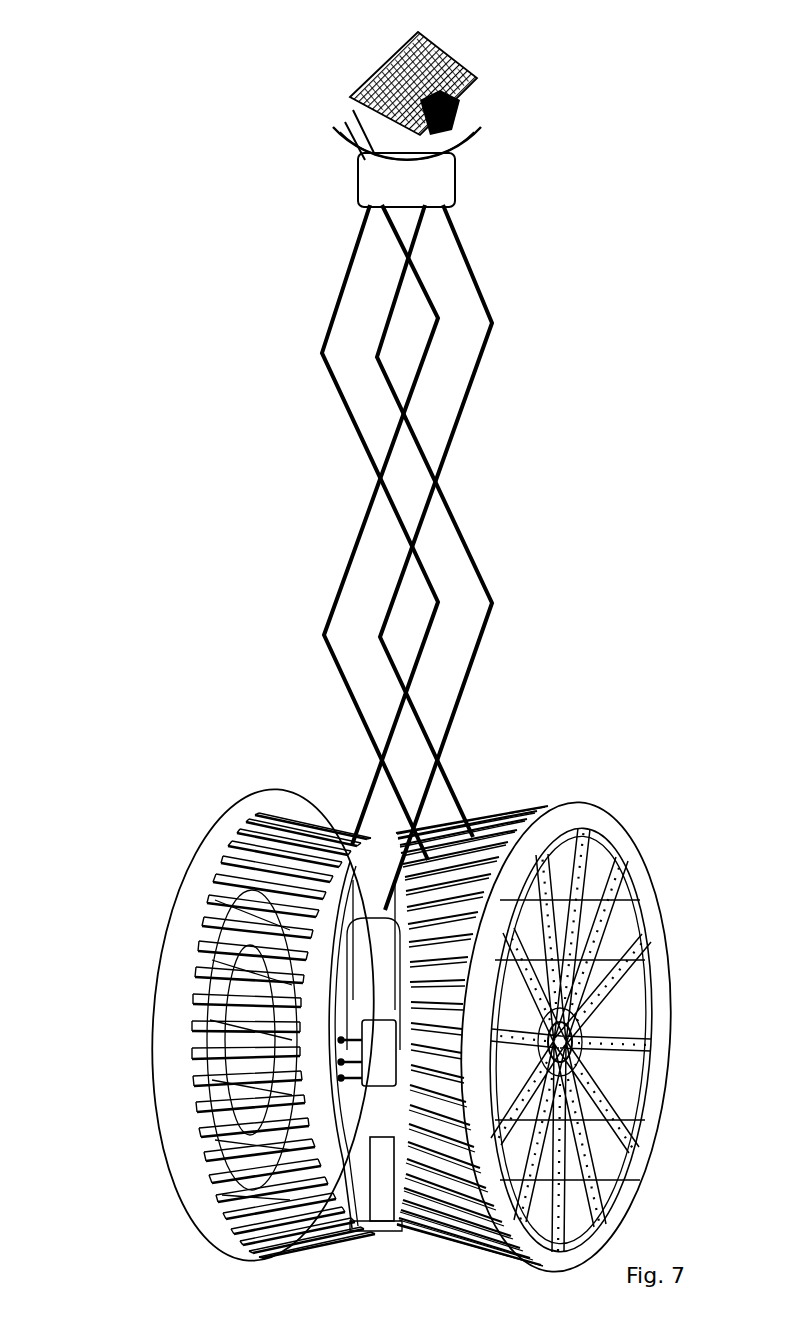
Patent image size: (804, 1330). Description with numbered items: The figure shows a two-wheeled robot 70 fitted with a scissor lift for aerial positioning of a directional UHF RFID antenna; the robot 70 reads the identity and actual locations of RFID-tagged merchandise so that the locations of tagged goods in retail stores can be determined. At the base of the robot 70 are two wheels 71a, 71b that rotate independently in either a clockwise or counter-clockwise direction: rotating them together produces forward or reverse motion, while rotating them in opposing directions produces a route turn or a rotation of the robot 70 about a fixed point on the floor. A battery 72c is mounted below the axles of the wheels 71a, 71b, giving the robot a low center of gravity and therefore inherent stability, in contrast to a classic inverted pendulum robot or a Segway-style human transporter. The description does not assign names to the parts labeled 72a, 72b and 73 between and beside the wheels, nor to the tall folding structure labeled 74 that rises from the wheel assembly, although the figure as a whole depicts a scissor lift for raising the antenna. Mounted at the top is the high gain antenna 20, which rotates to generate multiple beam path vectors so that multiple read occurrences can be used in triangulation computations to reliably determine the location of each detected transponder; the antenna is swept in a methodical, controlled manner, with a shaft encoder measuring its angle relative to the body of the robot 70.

The robot 70 is at (174, 106).
The high gain antenna 20 is at (366, 58).
The scissor lift mechanism 74 is at (470, 545).
The wheel 71a is at (232, 823).
The wheel 71b is at (592, 815).
The left wheel fins 72a is at (300, 1090).
The right wheel spokes 72b is at (523, 1120).
The battery 72c is at (390, 1197).
The central chassis body 73 is at (352, 983).